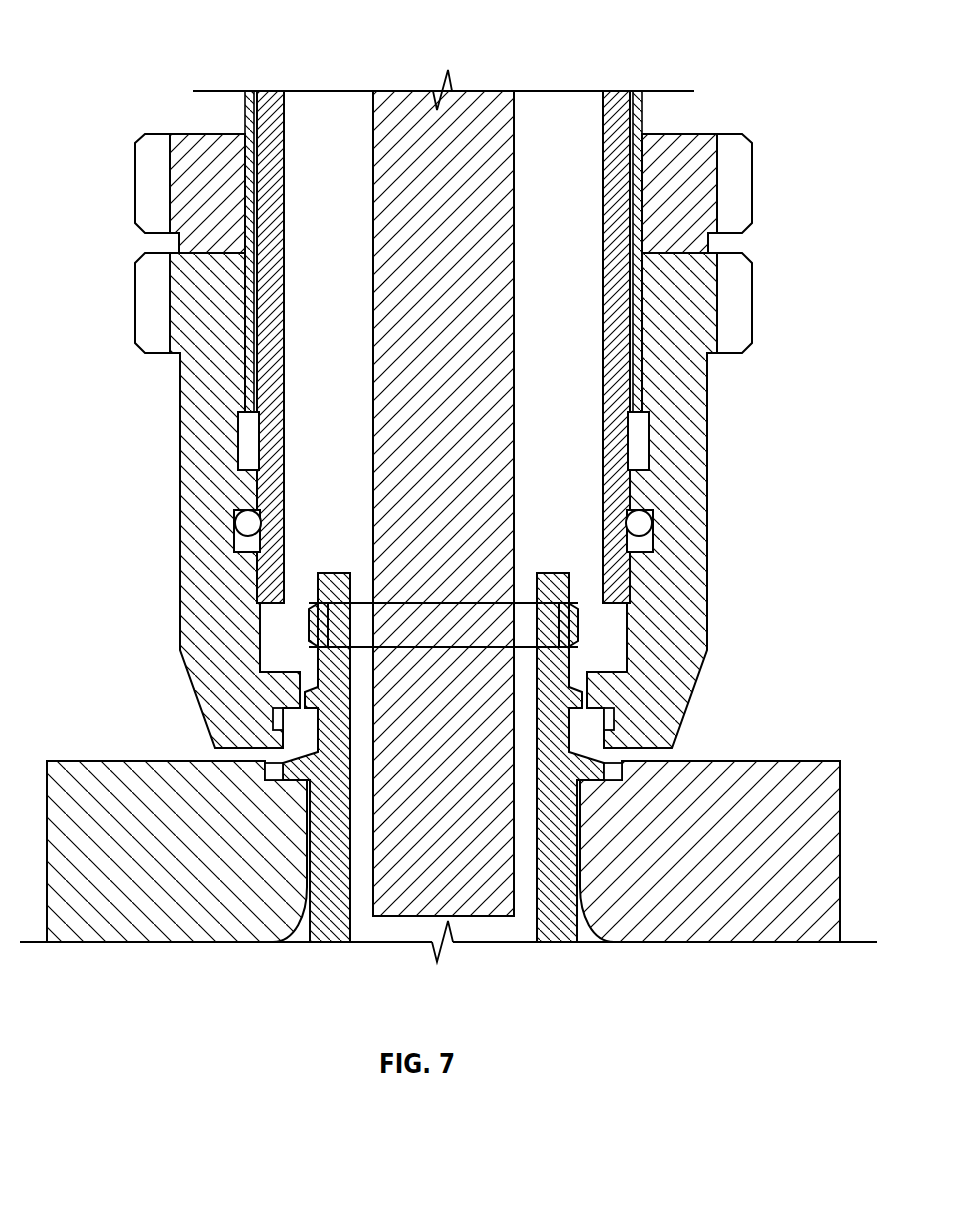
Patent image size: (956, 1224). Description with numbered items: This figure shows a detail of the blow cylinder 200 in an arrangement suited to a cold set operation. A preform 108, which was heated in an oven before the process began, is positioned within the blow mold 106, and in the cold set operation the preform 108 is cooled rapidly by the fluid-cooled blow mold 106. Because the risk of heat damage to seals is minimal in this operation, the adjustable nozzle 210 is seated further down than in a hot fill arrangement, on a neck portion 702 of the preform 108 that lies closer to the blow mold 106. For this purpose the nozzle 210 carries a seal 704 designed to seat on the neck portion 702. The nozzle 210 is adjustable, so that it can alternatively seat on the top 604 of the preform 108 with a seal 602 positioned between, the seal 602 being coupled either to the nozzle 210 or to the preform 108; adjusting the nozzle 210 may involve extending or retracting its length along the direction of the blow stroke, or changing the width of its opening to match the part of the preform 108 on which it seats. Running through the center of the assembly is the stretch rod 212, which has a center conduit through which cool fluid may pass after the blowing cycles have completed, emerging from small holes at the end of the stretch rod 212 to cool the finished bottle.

The blow cylinder 200 is at (153, 34).
The blow mold 106 is at (93, 770).
The preform 108 is at (332, 657).
The adjustable nozzle 210 is at (195, 522).
The stretch rod 212 is at (385, 317).
The seal 602 is at (272, 683).
The top of preform 604 is at (330, 587).
The neck portion of preform 702 is at (292, 772).
The seal 704 is at (275, 722).